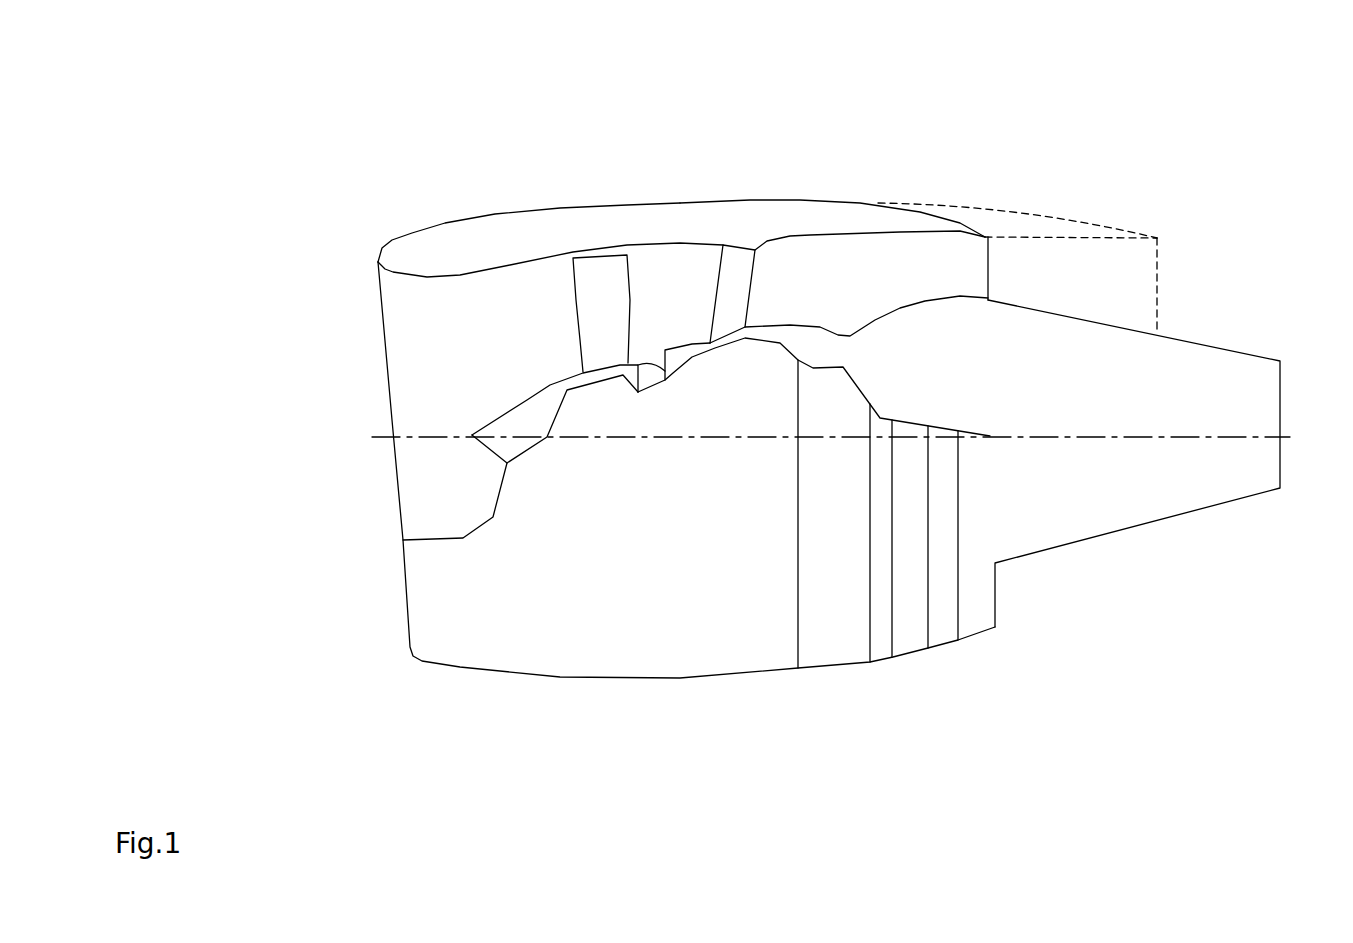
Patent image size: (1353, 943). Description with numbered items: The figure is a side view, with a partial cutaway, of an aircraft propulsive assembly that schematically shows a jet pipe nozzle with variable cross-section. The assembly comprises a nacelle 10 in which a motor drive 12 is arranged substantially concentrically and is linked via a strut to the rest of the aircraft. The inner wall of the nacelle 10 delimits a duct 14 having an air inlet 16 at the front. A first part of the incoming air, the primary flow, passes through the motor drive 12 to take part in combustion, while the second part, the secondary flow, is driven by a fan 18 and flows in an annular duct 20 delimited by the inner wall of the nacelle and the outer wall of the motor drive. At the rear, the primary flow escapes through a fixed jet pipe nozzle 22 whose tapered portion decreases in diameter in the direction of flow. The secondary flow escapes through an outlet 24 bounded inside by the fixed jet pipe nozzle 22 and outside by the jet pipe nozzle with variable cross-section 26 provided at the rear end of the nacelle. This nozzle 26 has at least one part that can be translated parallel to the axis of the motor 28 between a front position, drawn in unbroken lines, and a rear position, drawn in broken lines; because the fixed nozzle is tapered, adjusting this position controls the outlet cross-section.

The nacelle 10 is at (532, 222).
The motor drive 12 is at (819, 334).
The duct 14 is at (442, 330).
The air inlet 16 is at (384, 479).
The fan 18 is at (611, 270).
The annular duct 20 is at (848, 258).
The fixed jet pipe nozzle 22 is at (1137, 342).
The outlet 24 is at (1000, 272).
The jet pipe nozzle with variable cross-section 26 is at (877, 203).
The axis of the motor 28 is at (1222, 432).